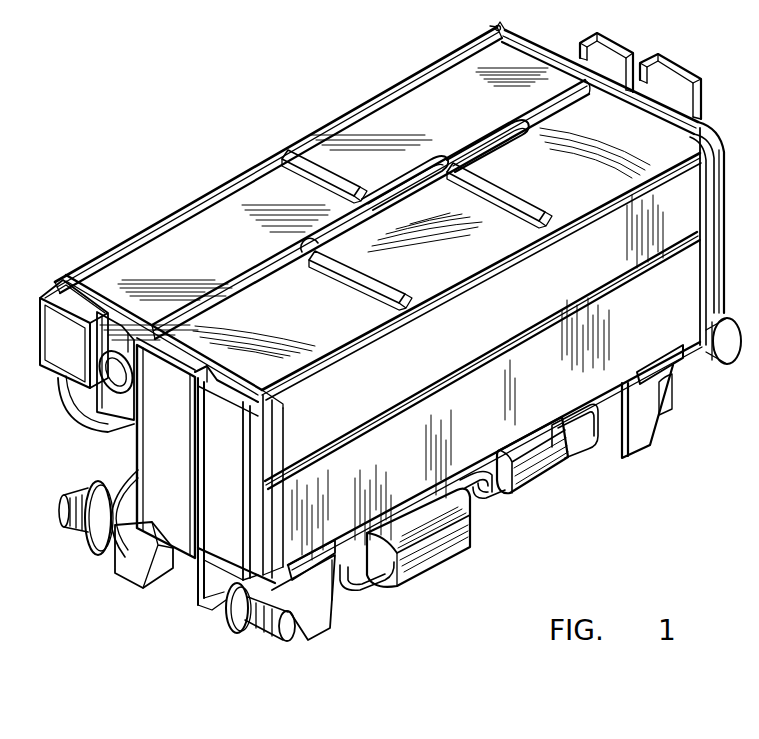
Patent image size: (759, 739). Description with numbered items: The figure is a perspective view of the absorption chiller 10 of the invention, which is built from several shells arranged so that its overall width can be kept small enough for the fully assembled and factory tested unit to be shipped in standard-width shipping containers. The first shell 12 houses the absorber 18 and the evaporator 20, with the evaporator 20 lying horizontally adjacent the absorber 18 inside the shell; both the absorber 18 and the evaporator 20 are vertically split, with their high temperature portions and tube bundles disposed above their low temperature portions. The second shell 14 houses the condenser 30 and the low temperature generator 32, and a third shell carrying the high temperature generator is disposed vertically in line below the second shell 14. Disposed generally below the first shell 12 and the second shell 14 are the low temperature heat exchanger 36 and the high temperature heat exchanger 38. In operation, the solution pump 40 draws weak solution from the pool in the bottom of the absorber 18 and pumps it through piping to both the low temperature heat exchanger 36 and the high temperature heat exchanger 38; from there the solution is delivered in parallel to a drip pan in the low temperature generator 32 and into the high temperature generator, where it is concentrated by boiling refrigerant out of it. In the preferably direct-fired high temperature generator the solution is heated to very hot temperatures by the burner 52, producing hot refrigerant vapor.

The chiller 10 is at (165, 207).
The first shell 12 is at (492, 335).
The second shell 14 is at (448, 121).
The absorber 18 is at (180, 472).
The evaporator 20 is at (244, 516).
The condenser 30 is at (113, 340).
The low temperature generator 32 is at (80, 364).
The low temperature heat exchanger 36 is at (430, 550).
The high temperature heat exchanger 38 is at (552, 455).
The solution pump 40 is at (243, 633).
The burner 52 is at (80, 550).